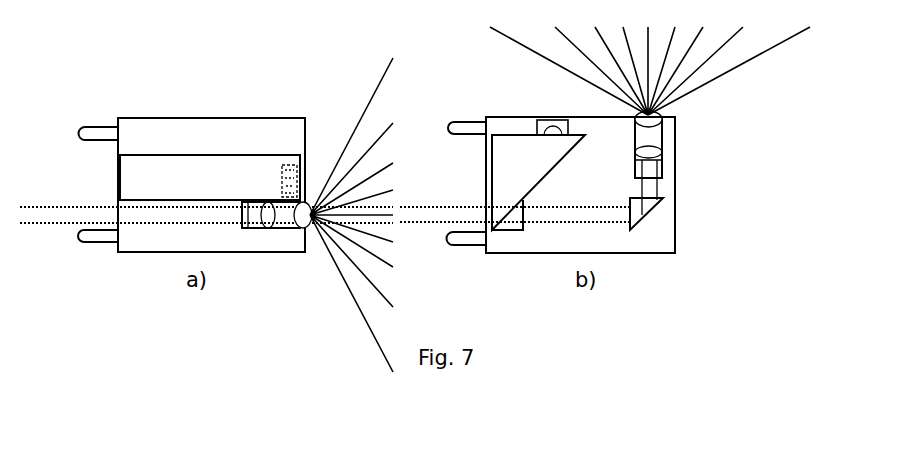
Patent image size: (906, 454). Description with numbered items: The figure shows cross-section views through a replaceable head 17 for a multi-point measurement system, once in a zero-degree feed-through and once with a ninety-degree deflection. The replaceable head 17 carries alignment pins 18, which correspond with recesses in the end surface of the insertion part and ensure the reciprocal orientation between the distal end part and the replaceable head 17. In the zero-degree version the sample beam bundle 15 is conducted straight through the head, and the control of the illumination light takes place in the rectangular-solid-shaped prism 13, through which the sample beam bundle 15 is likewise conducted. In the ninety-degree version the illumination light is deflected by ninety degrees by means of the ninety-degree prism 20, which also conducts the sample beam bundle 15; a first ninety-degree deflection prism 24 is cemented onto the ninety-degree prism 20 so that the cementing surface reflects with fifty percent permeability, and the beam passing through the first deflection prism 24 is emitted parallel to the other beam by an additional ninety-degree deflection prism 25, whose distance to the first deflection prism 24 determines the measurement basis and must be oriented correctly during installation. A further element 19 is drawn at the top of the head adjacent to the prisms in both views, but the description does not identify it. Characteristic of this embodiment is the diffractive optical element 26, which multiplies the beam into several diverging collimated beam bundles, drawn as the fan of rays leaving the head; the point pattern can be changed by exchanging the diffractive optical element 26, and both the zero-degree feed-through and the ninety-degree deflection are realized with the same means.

The rectangular-solid-shaped prism 13 is at (200, 173).
The sample beam bundle 15 is at (58, 207).
The replaceable head 17 is at (160, 127).
The alignment pins 18 is at (92, 133).
The light source (LED) 19 is at (306, 160).
The 90° prism 20 is at (542, 150).
The first 90° deflection prism 24 is at (517, 226).
The deflection prism 25 is at (648, 212).
The diffractive optical element 26 is at (256, 215).